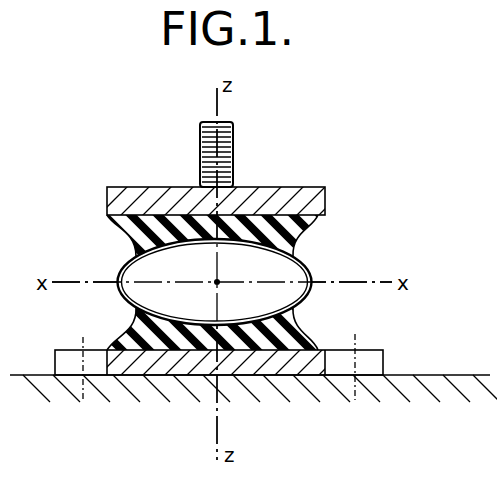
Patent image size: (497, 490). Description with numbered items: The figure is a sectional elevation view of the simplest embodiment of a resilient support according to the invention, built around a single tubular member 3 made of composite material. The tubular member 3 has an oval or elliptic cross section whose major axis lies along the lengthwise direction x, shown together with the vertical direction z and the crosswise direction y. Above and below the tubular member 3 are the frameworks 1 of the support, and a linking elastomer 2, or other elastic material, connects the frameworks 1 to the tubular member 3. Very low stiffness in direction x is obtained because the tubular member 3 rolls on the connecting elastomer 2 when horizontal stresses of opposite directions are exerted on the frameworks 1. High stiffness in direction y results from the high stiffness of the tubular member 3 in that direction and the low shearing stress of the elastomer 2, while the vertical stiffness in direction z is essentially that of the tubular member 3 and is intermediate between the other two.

The frameworks 1 is at (259, 191).
The linking elastomer 2 is at (297, 233).
The tubular member 3 is at (132, 304).